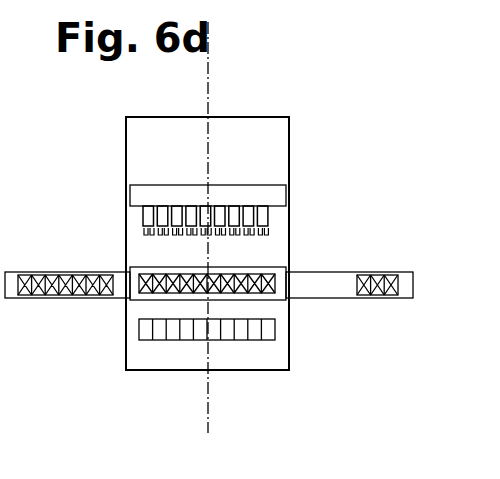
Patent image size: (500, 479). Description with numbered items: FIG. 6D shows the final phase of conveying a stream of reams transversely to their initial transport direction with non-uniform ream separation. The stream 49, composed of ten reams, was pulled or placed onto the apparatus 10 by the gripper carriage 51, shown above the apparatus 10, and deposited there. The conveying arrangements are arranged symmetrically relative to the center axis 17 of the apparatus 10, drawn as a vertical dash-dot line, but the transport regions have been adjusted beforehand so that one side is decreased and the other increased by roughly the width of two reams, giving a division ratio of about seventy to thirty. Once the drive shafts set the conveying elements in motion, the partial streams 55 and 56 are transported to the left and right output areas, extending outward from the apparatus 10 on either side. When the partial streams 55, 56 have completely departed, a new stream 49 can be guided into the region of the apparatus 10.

The center axis 17 is at (208, 60).
The apparatus 10 is at (170, 304).
The gripper carriage 51 is at (240, 213).
The stream 49 is at (237, 298).
The partial stream 56 is at (65, 303).
The partial stream 55 is at (369, 303).